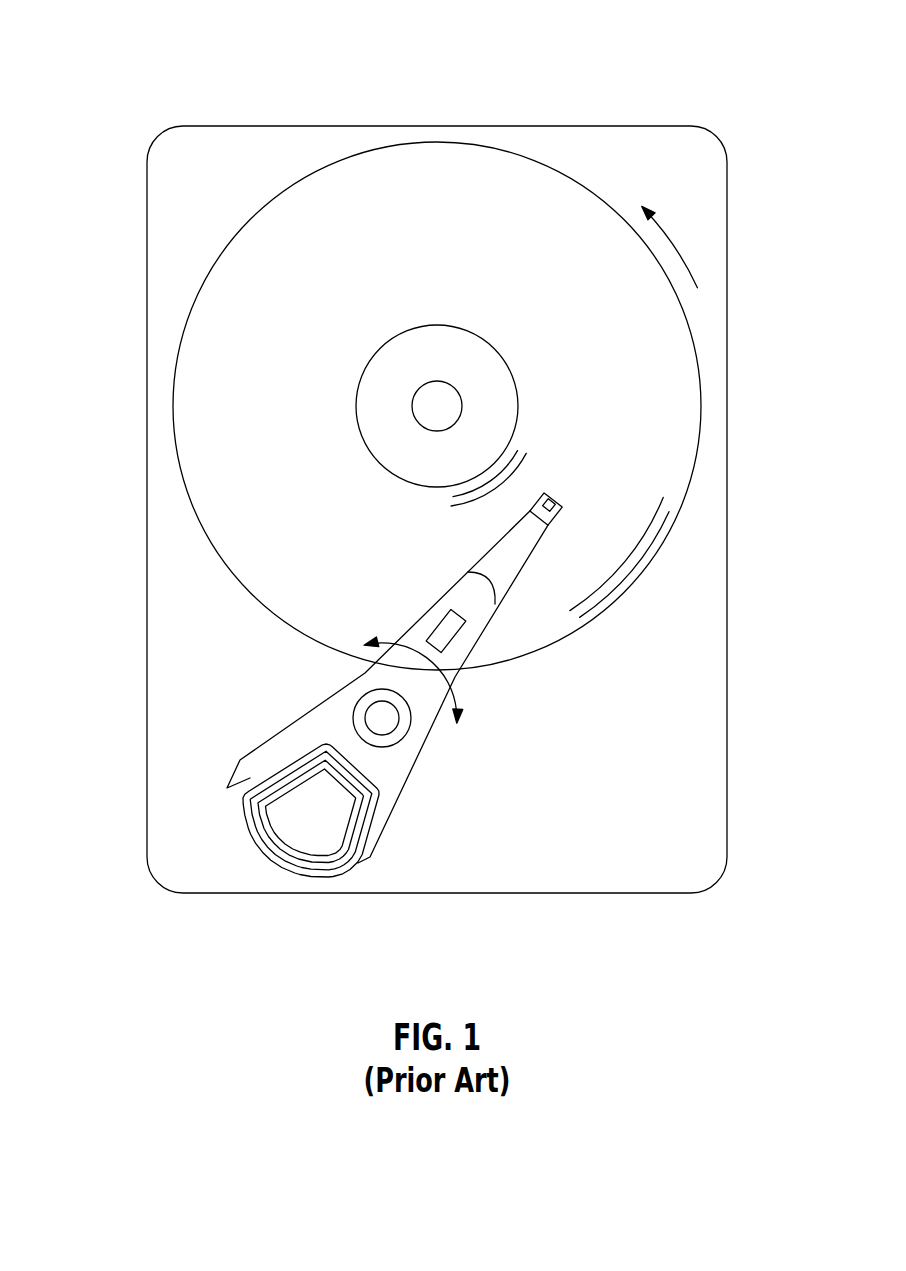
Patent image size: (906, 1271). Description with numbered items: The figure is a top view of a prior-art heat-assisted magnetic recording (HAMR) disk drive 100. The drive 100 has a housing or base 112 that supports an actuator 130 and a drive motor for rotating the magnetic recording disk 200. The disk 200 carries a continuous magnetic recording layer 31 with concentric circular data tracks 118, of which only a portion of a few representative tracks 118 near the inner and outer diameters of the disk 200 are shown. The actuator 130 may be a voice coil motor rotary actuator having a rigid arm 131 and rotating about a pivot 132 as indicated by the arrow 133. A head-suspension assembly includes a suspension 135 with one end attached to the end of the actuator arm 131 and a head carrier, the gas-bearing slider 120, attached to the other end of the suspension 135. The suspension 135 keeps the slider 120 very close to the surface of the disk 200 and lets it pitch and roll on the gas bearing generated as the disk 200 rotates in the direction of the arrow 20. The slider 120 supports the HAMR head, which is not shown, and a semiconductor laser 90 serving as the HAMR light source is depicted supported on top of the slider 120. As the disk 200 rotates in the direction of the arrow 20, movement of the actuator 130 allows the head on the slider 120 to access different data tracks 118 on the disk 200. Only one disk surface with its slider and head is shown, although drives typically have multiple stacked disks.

The HAMR disk drive 100 is at (143, 47).
The housing or base 112 is at (657, 126).
The disk 200 is at (297, 180).
The arrow 20 is at (668, 229).
The continuous magnetic recording layer 31 is at (678, 370).
The data tracks 118 is at (688, 497).
The semiconductor laser 90 is at (561, 503).
The gas-bearing slider 120 is at (557, 517).
The actuator 130 is at (232, 775).
The rigid arm 131 is at (423, 625).
The pivot 132 is at (375, 717).
The arrow 133 is at (460, 698).
The suspension 135 is at (480, 572).